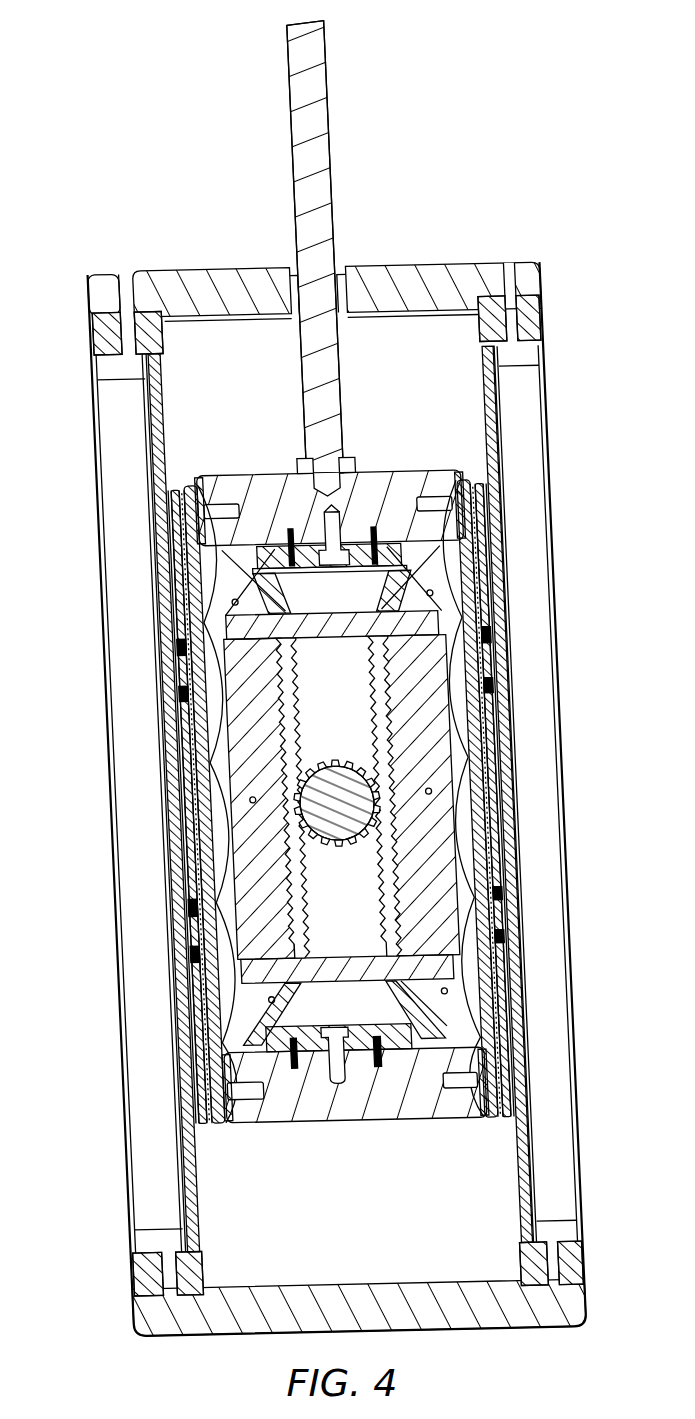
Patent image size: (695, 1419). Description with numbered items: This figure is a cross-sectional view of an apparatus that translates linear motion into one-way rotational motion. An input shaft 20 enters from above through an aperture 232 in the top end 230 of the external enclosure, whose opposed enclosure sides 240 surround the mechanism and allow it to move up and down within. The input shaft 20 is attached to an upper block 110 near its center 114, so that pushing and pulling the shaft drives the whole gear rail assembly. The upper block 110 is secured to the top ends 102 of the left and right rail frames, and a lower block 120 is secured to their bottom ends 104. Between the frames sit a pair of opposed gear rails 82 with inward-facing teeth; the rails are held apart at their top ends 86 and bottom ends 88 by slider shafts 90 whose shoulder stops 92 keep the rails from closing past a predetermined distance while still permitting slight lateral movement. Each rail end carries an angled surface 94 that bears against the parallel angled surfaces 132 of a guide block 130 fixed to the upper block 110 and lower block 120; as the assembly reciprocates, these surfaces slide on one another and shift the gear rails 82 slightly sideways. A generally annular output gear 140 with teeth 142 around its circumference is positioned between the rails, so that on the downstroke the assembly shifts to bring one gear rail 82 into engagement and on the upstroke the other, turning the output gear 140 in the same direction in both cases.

The input shaft 20 is at (313, 115).
The gear rails 82 is at (268, 706).
The top ends 86 is at (264, 600).
The bottom ends 88 is at (290, 1008).
The slider shafts 90 is at (336, 628).
The shoulder stops 92 is at (283, 962).
The angled surface 94 is at (254, 555).
The top ends 102 is at (195, 482).
The bottom ends 104 is at (482, 1115).
The upper block 110 is at (413, 482).
The center 114 is at (350, 460).
The lower block 120 is at (360, 1100).
The guide block 130 is at (363, 540).
The angled surfaces 132 is at (282, 1093).
The output gear 140 is at (330, 772).
The teeth 142 is at (347, 770).
The top end 230 is at (430, 288).
The aperture 232 is at (338, 270).
The enclosure sides 240 is at (522, 563).